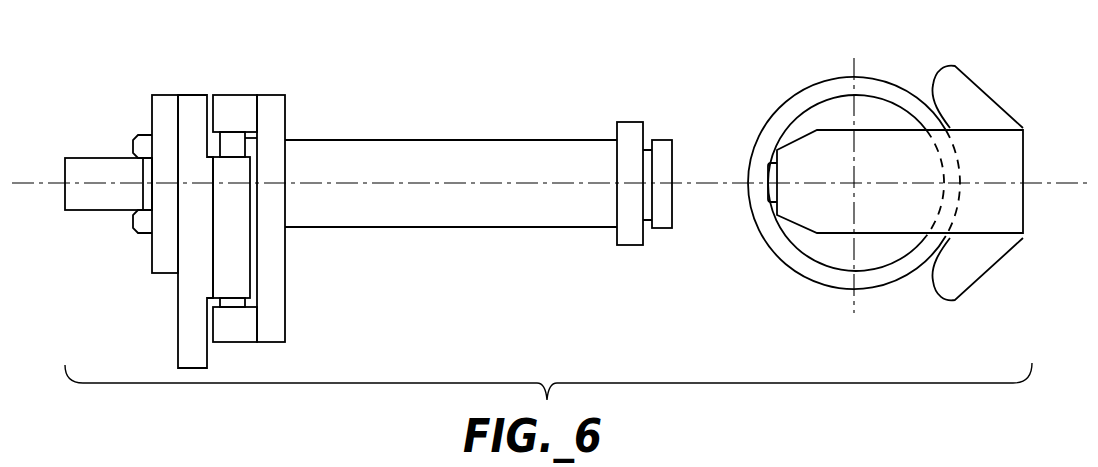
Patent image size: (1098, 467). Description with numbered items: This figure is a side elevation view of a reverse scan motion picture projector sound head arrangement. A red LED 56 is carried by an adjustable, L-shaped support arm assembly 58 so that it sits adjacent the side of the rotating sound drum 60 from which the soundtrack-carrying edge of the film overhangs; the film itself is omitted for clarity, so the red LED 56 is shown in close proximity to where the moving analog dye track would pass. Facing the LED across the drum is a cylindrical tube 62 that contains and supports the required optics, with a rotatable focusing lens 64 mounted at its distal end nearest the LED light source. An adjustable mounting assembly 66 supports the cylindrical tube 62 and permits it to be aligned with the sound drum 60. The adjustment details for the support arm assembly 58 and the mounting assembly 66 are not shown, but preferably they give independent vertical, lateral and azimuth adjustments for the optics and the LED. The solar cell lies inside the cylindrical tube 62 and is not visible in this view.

The red LED 56 is at (767, 180).
The L-shaped support arm assembly 58 is at (1025, 224).
The sound drum 60 is at (845, 289).
The cylindrical tube 62 is at (430, 228).
The rotatable focusing lens 64 is at (632, 247).
The adjustable mounting assembly 66 is at (247, 343).